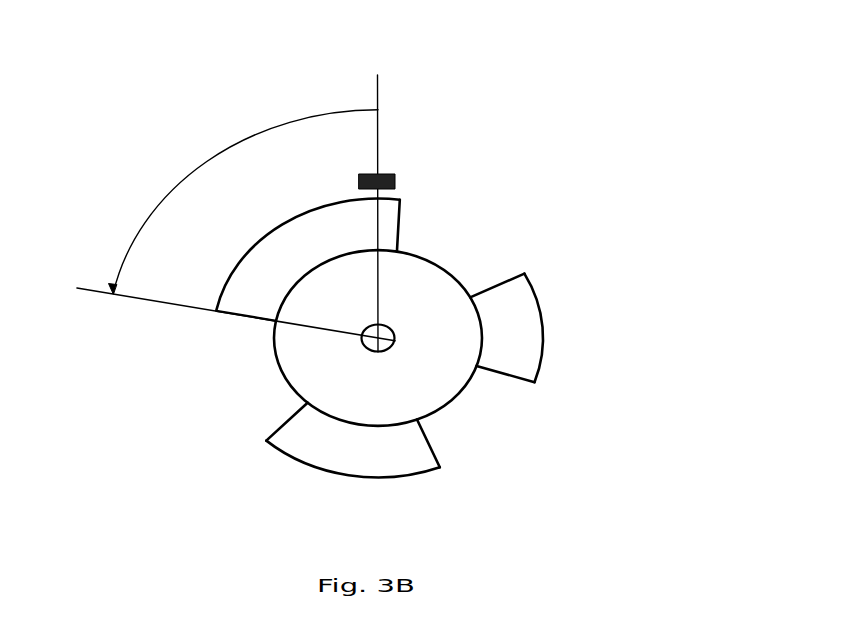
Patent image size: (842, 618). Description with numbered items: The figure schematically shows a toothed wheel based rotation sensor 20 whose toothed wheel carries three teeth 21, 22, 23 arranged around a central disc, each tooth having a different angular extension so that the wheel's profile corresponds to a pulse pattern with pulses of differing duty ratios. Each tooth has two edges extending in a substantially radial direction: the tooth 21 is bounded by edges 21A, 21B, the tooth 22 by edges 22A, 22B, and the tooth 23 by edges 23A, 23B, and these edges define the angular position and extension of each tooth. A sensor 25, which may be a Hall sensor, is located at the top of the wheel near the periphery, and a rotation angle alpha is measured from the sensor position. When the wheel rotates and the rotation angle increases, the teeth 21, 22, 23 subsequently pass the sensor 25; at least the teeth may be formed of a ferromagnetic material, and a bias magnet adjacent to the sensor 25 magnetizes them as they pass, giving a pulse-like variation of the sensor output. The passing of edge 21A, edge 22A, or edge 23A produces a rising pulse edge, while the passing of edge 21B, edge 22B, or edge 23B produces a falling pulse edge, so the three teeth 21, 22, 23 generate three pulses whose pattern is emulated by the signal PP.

The toothed wheel based rotation sensor 20 is at (508, 148).
The tooth 21 is at (290, 215).
The edge 21A is at (240, 317).
The edge 21B is at (402, 227).
The tooth 22 is at (547, 333).
The edge 22A is at (502, 280).
The edge 22B is at (512, 377).
The tooth 23 is at (307, 467).
The edge 23A is at (433, 448).
The edge 23B is at (280, 425).
The sensor 25 is at (398, 182).